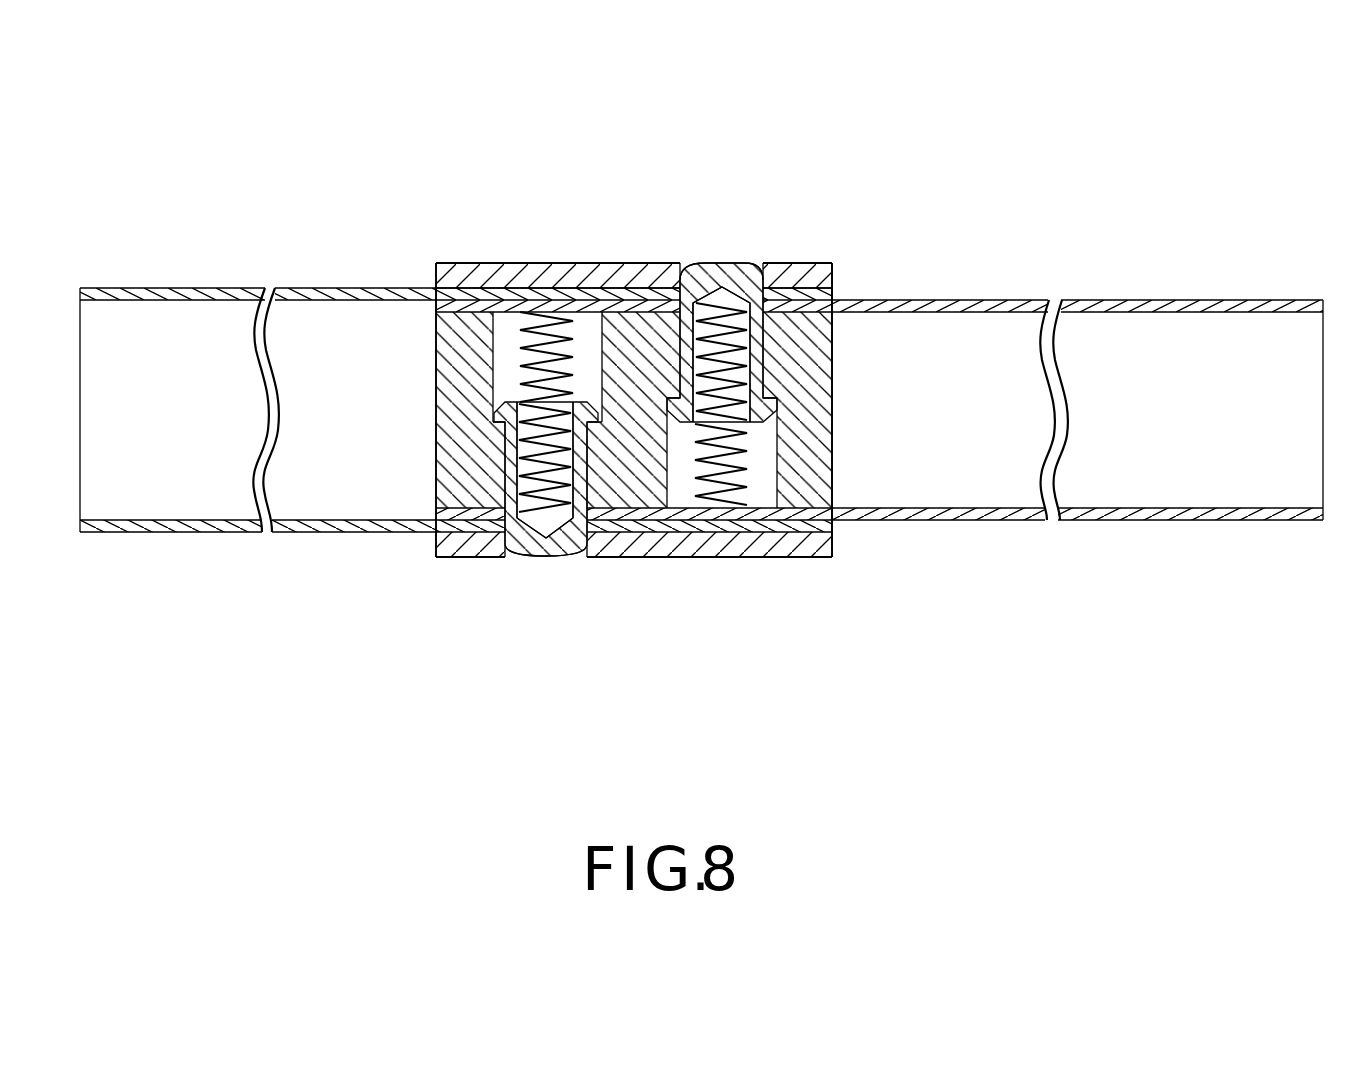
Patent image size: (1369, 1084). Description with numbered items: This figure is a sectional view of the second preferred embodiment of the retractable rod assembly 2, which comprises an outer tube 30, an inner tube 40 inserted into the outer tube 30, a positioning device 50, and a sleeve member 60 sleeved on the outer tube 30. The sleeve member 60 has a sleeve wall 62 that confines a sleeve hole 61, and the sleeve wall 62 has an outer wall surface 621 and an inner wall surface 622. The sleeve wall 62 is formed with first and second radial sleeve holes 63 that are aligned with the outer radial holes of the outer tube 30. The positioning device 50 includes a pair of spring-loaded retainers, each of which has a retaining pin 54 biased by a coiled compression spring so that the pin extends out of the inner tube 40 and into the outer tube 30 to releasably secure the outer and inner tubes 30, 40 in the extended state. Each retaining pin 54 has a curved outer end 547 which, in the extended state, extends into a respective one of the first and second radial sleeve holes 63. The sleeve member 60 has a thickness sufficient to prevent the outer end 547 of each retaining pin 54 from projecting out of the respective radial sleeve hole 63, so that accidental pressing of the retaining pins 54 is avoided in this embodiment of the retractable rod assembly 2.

The retractable rod assembly 2 is at (812, 602).
The outer tube 30 is at (324, 278).
The inner tube 40 is at (1105, 294).
The positioning device 50 is at (848, 390).
The retaining pin 54 is at (698, 263).
The curved outer end 547 is at (750, 263).
The sleeve member 60 is at (543, 258).
The sleeve hole 61 is at (487, 286).
The inner wall surface 622 is at (620, 344).
The sleeve wall 62 is at (830, 263).
The outer wall surface 621 is at (797, 263).
The radial sleeve holes 63 is at (683, 263).